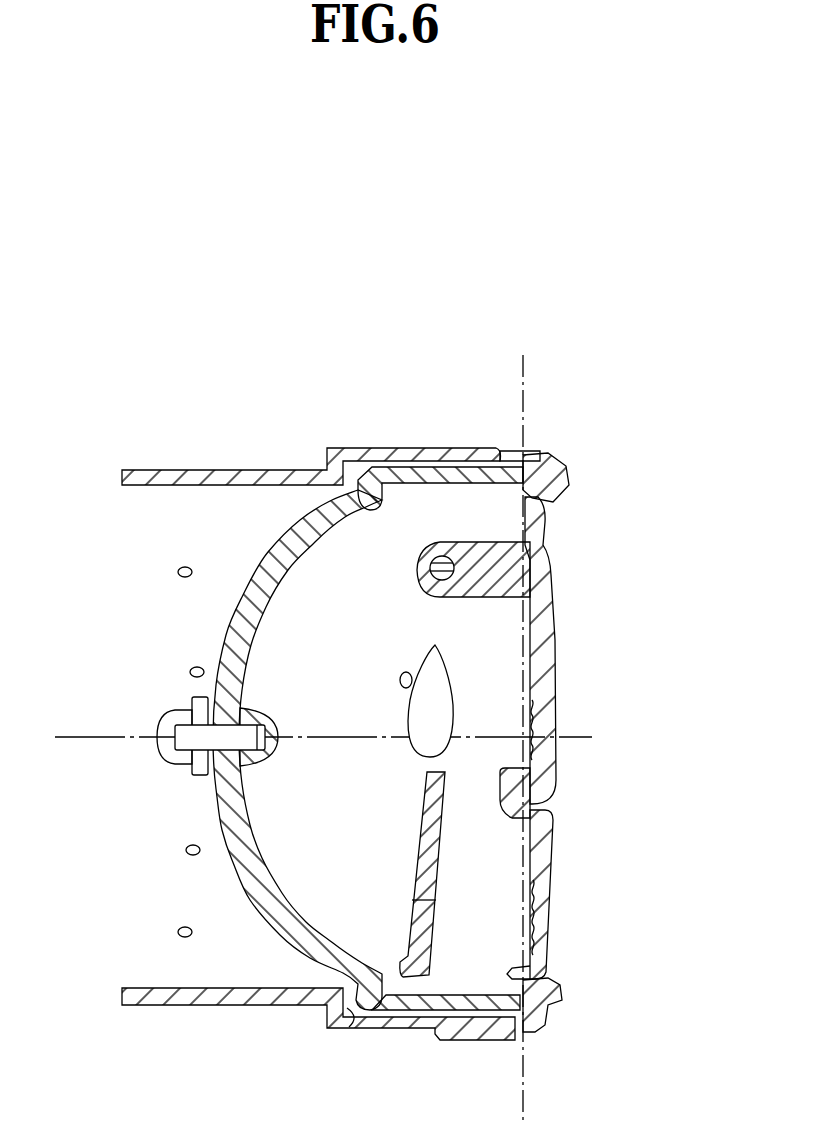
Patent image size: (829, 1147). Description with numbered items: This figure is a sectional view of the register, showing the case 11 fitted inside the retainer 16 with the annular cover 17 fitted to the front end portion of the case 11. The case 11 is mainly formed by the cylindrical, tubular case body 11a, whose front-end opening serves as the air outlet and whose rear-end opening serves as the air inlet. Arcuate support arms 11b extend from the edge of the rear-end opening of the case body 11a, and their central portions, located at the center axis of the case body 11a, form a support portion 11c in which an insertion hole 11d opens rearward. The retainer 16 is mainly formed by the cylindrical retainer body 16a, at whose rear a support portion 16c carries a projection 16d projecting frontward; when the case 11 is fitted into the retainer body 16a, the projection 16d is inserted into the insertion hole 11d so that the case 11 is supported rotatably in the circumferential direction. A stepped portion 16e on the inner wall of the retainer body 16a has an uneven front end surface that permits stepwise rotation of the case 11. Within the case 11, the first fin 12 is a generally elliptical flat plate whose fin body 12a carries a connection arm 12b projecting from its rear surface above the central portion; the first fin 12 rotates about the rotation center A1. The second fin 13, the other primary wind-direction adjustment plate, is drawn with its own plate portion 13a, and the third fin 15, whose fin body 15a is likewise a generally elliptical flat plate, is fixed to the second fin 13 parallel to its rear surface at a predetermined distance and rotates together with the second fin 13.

The retainer 16 is at (338, 450).
The case 11 is at (435, 465).
The support arms 11b is at (262, 583).
The case body 11a is at (412, 1012).
The retainer body 16a is at (210, 1000).
The stepped portion 16e is at (348, 1012).
The cover 17 is at (567, 484).
The first fin 12 is at (559, 633).
The fin body 12a is at (550, 721).
The second fin 13 is at (560, 857).
The lower lens inner surface 13a is at (542, 931).
The connection arm 12b is at (472, 602).
The rotation center A1 is at (439, 575).
The third fin 15 is at (418, 862).
The fin body 15a is at (432, 905).
The projection 16d is at (237, 725).
The support portion 16c is at (165, 722).
The support portion 11c is at (272, 723).
The insertion hole 11d is at (241, 752).